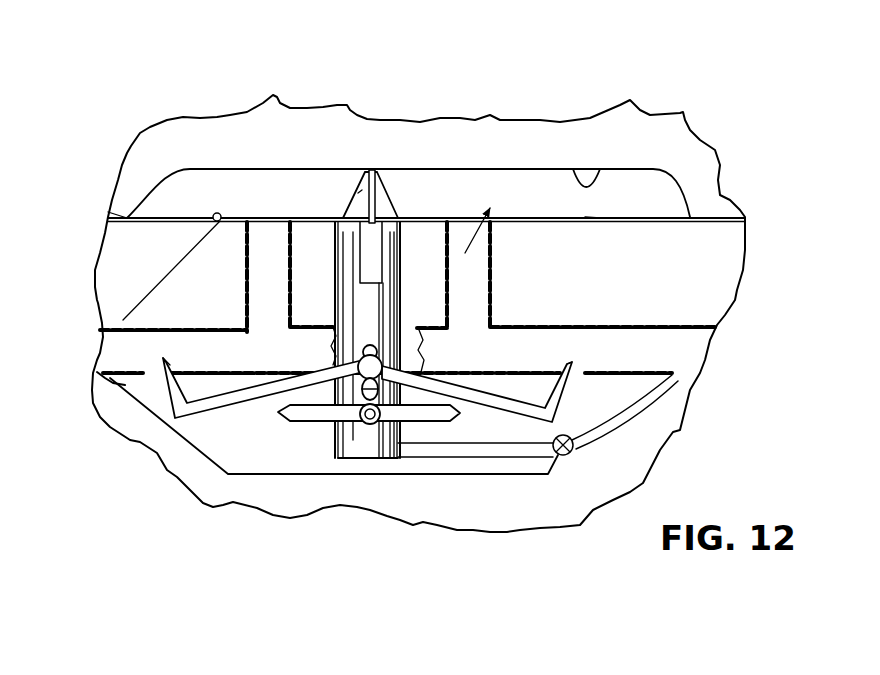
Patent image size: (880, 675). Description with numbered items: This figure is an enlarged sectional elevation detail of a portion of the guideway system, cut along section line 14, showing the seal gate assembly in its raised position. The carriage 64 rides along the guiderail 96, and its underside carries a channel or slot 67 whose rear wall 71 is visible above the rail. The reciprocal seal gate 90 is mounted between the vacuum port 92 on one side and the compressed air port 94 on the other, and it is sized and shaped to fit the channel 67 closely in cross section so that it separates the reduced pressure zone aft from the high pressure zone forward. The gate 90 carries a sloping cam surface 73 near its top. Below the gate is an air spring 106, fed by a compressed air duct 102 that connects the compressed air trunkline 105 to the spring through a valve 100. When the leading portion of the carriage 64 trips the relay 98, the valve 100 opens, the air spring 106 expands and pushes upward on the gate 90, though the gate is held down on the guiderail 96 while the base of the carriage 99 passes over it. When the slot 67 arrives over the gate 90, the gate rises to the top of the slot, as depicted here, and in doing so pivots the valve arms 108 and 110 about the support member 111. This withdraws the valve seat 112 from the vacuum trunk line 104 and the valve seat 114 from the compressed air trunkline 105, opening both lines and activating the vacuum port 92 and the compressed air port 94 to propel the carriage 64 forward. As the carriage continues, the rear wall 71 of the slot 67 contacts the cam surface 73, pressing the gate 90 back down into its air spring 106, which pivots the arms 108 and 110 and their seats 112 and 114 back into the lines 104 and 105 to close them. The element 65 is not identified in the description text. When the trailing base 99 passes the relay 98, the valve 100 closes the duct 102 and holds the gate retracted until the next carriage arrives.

The section line 14- 14 is at (372, 70).
The carriage 64 is at (502, 137).
The base frame 65 is at (187, 473).
The channel (recess or slot) 67 is at (600, 170).
The rear wall of slot 71 is at (153, 190).
The sloping cam surface 73 is at (358, 193).
The reciprocal seal gate 90 is at (393, 155).
The vacuum port 92 is at (259, 250).
The compressed air port 94 is at (458, 233).
The guiderail 96 is at (585, 217).
The relay 98 is at (218, 213).
The base of carriage 99 is at (117, 213).
The valve 100 is at (560, 455).
The compressed air duct 102 is at (610, 430).
The vacuum trunk line 104 is at (248, 356).
The compressed air trunkline 105 is at (635, 358).
The air spring 106 is at (343, 448).
The valve arm 108 is at (243, 403).
The valve arm 110 is at (490, 400).
The support member 111 is at (307, 421).
The valve seat 112 is at (290, 384).
The valve seat 114 is at (562, 393).